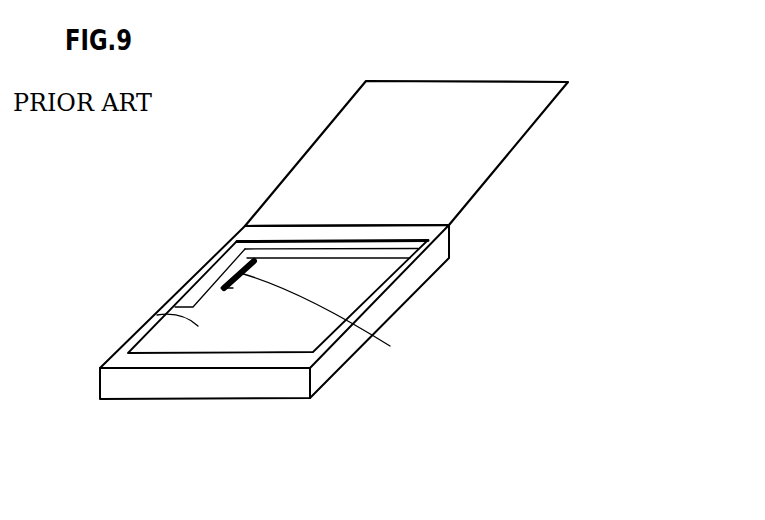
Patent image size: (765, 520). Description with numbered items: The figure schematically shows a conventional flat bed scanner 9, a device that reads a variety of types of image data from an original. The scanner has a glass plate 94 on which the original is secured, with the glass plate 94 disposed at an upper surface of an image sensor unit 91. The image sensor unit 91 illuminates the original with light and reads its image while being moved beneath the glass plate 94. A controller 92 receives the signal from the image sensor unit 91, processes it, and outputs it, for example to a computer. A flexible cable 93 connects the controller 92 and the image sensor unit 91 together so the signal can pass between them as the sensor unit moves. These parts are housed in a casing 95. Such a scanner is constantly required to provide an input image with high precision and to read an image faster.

The flat bed scanner 9 is at (329, 281).
The image sensor unit 91 is at (371, 246).
The controller 92 is at (370, 334).
The flexible cable 93 is at (209, 279).
The glass plate 94 is at (157, 315).
The casing 95 is at (150, 388).